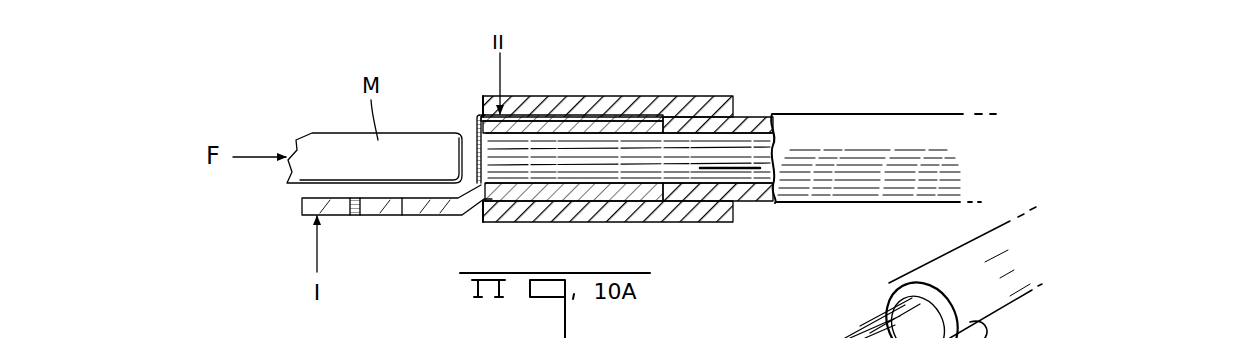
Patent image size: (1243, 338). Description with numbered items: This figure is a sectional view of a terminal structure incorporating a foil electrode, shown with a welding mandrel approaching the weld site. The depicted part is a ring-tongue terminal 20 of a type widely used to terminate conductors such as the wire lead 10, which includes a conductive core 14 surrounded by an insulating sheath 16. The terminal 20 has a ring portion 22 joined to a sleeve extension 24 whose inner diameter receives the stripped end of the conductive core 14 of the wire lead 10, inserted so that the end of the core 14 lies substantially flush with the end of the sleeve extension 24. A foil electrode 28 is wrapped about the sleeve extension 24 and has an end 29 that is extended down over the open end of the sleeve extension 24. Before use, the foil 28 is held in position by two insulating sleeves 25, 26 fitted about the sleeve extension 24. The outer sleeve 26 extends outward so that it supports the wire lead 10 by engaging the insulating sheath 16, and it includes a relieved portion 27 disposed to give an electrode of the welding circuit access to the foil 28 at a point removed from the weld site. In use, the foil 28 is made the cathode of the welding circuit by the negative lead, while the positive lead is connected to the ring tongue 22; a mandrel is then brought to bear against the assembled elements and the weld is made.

The wire lead 10 is at (908, 113).
The conductive core 14 is at (754, 172).
The insulating sheath 16 is at (770, 115).
The ring-tongue terminal 20 is at (471, 243).
The ring portion 22 is at (302, 205).
The sleeve extension 24 is at (566, 203).
The insulating sleeve 25 is at (565, 115).
The insulating sleeve 26 is at (661, 96).
The relieved portion 27 is at (524, 98).
The foil electrode 28 is at (598, 99).
The end of foil electrode 29 is at (478, 137).